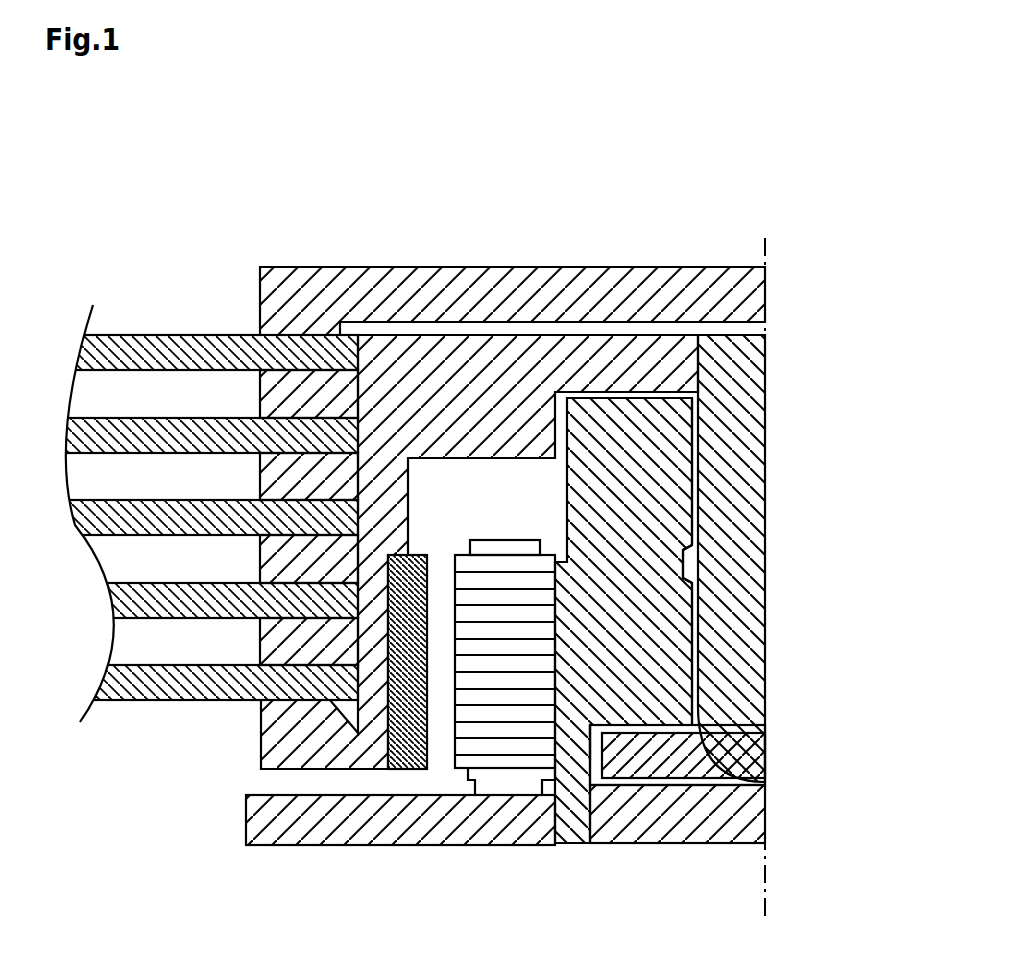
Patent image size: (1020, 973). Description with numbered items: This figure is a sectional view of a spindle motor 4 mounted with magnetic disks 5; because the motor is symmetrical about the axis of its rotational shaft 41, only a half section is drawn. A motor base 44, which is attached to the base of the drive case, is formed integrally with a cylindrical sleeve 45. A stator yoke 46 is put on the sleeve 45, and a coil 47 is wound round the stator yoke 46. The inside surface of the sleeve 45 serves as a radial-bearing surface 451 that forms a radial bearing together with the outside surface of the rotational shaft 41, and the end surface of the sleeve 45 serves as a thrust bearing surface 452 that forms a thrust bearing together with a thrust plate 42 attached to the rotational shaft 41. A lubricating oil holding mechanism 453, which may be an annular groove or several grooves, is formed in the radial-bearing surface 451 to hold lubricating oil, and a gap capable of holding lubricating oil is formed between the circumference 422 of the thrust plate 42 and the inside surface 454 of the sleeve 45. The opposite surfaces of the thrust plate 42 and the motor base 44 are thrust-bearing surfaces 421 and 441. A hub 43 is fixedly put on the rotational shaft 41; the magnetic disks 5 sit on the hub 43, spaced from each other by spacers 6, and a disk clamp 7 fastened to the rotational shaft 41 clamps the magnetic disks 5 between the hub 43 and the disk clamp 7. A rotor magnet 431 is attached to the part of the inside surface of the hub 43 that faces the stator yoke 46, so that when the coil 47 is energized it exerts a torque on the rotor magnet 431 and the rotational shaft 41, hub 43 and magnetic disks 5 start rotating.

The spindle motor 4 is at (772, 349).
The rotational shaft 41 is at (748, 445).
The thrust plate 42 is at (702, 742).
The thrust-bearing surface 421 is at (750, 727).
The circumference of the thrust plate 422 is at (611, 757).
The hub 43 is at (650, 335).
The rotor magnet 431 is at (422, 553).
The motor base 44 is at (355, 845).
The thrust-bearing surface 441 is at (765, 792).
The cylindrical sleeve 45 is at (573, 845).
The radial-bearing surface 451 is at (688, 467).
The thrust bearing surface 452 is at (640, 723).
The lubricating oil holding mechanism 453 is at (687, 565).
The inside surface of the sleeve 454 is at (584, 745).
The stator yoke 46 is at (507, 547).
The coil 47 is at (510, 760).
The magnetic disks 5 is at (187, 335).
The spacers 6 is at (262, 392).
The disk clamp 7 is at (537, 267).